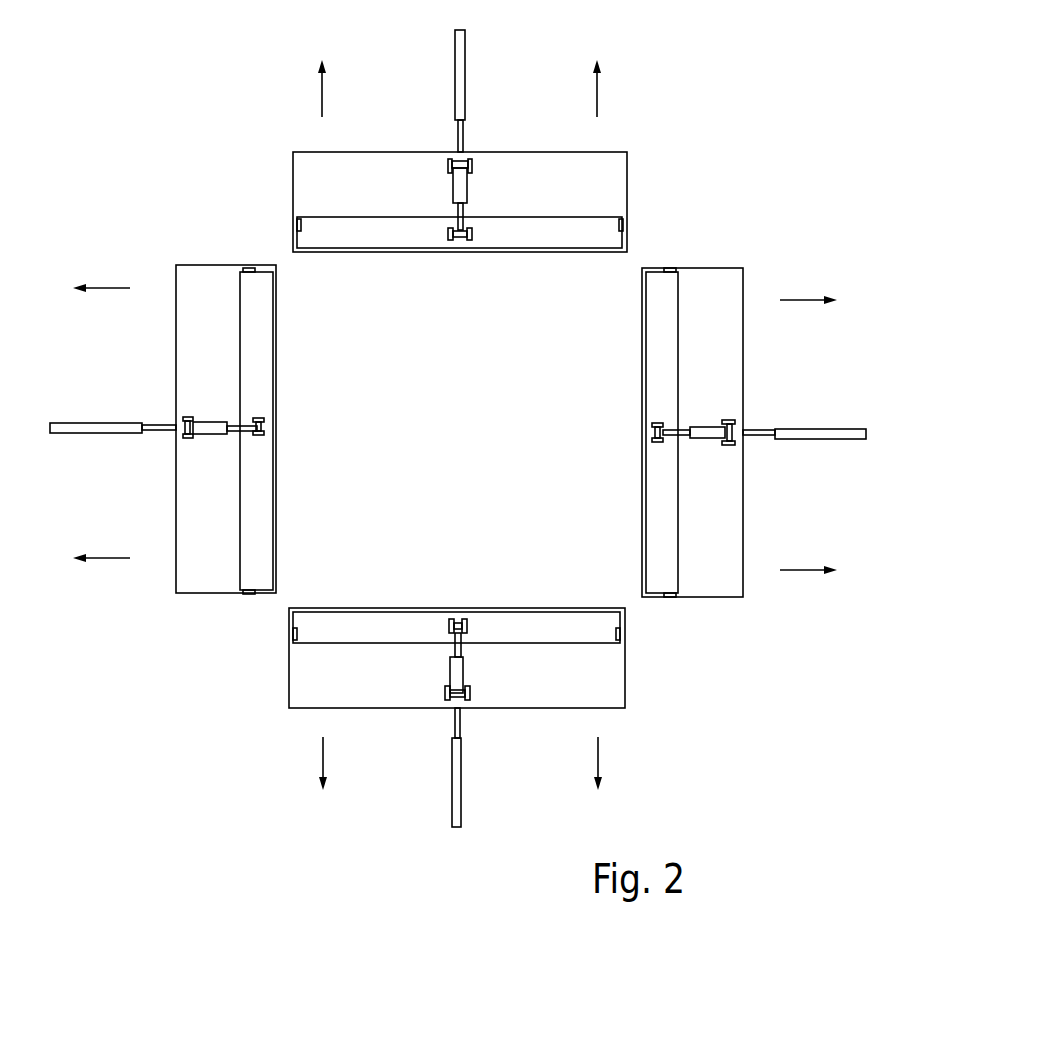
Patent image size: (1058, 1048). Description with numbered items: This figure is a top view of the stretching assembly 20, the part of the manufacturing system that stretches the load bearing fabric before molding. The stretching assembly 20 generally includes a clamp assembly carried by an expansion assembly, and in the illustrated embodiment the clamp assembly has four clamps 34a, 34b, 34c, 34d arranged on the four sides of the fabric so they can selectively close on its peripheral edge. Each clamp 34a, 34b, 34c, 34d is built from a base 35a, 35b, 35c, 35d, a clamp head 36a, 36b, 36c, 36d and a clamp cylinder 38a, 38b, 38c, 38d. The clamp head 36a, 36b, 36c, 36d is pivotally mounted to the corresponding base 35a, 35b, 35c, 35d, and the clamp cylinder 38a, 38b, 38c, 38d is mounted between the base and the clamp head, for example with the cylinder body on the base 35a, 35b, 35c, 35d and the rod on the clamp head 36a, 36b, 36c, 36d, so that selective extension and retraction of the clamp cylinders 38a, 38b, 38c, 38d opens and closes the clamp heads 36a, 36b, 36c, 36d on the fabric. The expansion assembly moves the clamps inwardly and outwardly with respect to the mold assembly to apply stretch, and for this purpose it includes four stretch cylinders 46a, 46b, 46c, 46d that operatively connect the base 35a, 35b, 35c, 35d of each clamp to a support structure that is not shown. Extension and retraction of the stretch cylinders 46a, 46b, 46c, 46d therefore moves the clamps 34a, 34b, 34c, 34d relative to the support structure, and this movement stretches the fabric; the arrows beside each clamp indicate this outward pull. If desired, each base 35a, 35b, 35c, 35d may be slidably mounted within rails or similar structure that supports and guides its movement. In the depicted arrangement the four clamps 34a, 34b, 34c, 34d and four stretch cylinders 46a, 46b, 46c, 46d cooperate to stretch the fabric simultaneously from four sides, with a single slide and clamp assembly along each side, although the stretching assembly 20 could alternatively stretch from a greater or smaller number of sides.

The stretching assembly 20 is at (728, 166).
The clamp 34a is at (223, 426).
The clamp 34b is at (731, 426).
The clamp 34c is at (466, 197).
The clamp 34d is at (456, 659).
The base 35a is at (203, 272).
The base 35b is at (724, 295).
The base 35c is at (613, 195).
The base 35d is at (597, 675).
The clamp head 36a is at (262, 337).
The clamp head 36b is at (657, 333).
The clamp head 36c is at (383, 236).
The clamp head 36d is at (388, 620).
The clamp cylinder 38a is at (213, 440).
The clamp cylinder 38b is at (705, 440).
The clamp cylinder 38c is at (452, 188).
The clamp cylinder 38d is at (463, 672).
The stretch cylinder 46a is at (111, 420).
The stretch cylinder 46b is at (792, 428).
The stretch cylinder 46c is at (465, 98).
The stretch cylinder 46d is at (460, 765).